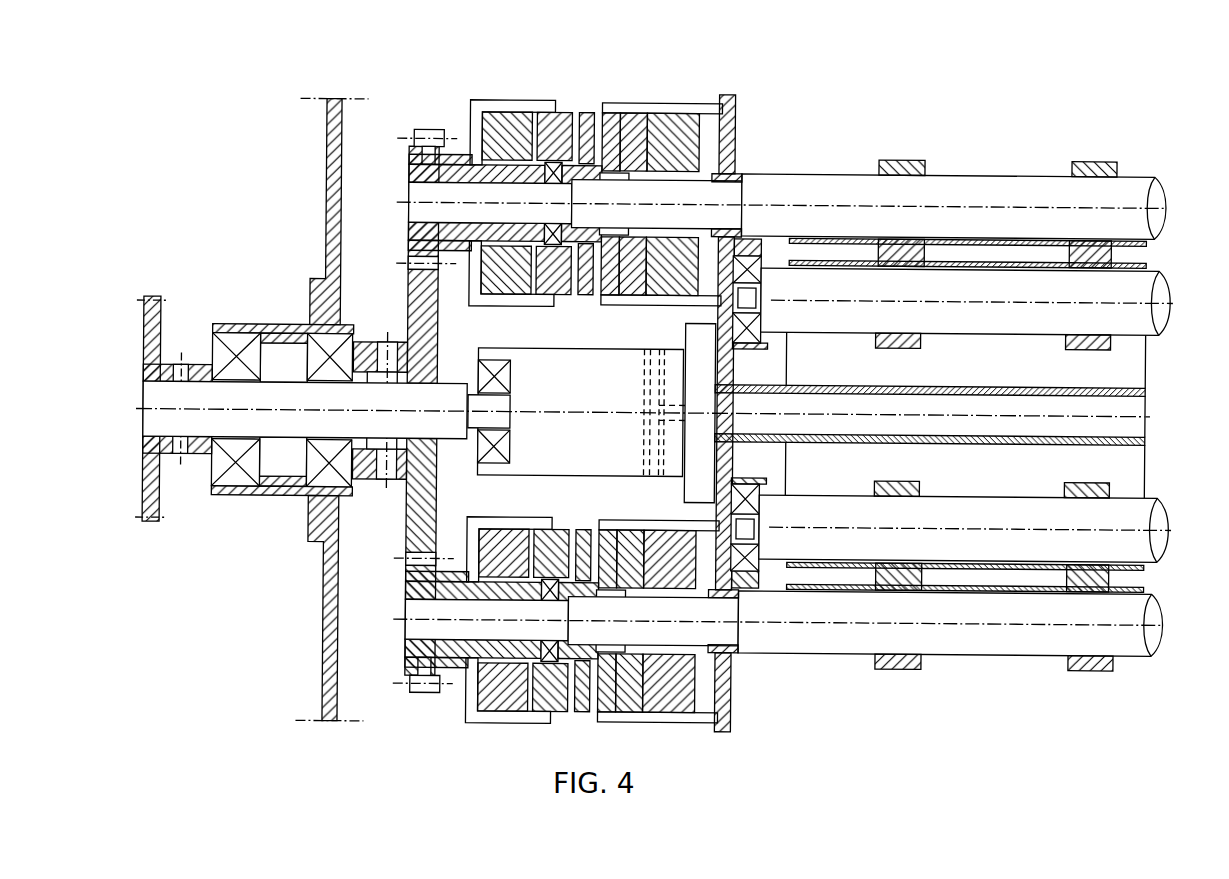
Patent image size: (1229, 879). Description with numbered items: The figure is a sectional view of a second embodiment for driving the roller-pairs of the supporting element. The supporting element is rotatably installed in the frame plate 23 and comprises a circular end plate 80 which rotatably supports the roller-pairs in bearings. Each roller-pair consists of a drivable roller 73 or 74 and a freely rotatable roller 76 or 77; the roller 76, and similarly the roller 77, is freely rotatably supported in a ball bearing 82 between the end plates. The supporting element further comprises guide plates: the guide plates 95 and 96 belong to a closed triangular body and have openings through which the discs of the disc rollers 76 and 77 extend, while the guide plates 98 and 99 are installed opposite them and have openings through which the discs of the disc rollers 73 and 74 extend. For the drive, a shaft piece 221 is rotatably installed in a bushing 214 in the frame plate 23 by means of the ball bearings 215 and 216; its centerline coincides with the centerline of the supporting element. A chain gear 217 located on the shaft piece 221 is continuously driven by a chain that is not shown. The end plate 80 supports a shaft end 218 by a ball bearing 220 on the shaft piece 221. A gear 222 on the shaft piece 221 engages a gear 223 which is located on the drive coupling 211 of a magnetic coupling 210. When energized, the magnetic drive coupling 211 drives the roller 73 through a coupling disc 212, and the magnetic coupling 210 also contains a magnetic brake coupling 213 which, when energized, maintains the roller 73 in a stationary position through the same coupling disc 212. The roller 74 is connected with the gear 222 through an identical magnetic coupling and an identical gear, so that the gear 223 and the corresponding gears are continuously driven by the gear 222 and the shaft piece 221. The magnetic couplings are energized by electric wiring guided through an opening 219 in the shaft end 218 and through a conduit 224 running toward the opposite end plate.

The frame plate 23 is at (335, 158).
The roller 73 is at (962, 173).
The roller 74 is at (968, 657).
The freely rotatable roller 76 is at (960, 333).
The freely rotatable roller 77 is at (962, 503).
The end plate 80 is at (733, 108).
The ball bearing 82 is at (744, 345).
The guide plate 95 is at (1150, 265).
The guide plate 96 is at (1145, 573).
The guide plate 98 is at (1147, 248).
The guide plate 99 is at (1147, 590).
The magnetic coupling 210 is at (564, 70).
The magnetic drive coupling 211 is at (488, 100).
The coupling disc 212 is at (580, 110).
The magnetic brake coupling 213 is at (630, 103).
The bushing 214 is at (280, 487).
The ball bearing 215 is at (235, 333).
The ball bearing 216 is at (300, 333).
The chain gear 217 is at (143, 336).
The shaft end 218 is at (552, 360).
The opening 219 is at (655, 365).
The ball bearing 220 is at (484, 373).
The shaft piece 221 is at (152, 420).
The gear 222 is at (412, 333).
The gear 223 is at (412, 150).
The conduit 224 is at (825, 384).